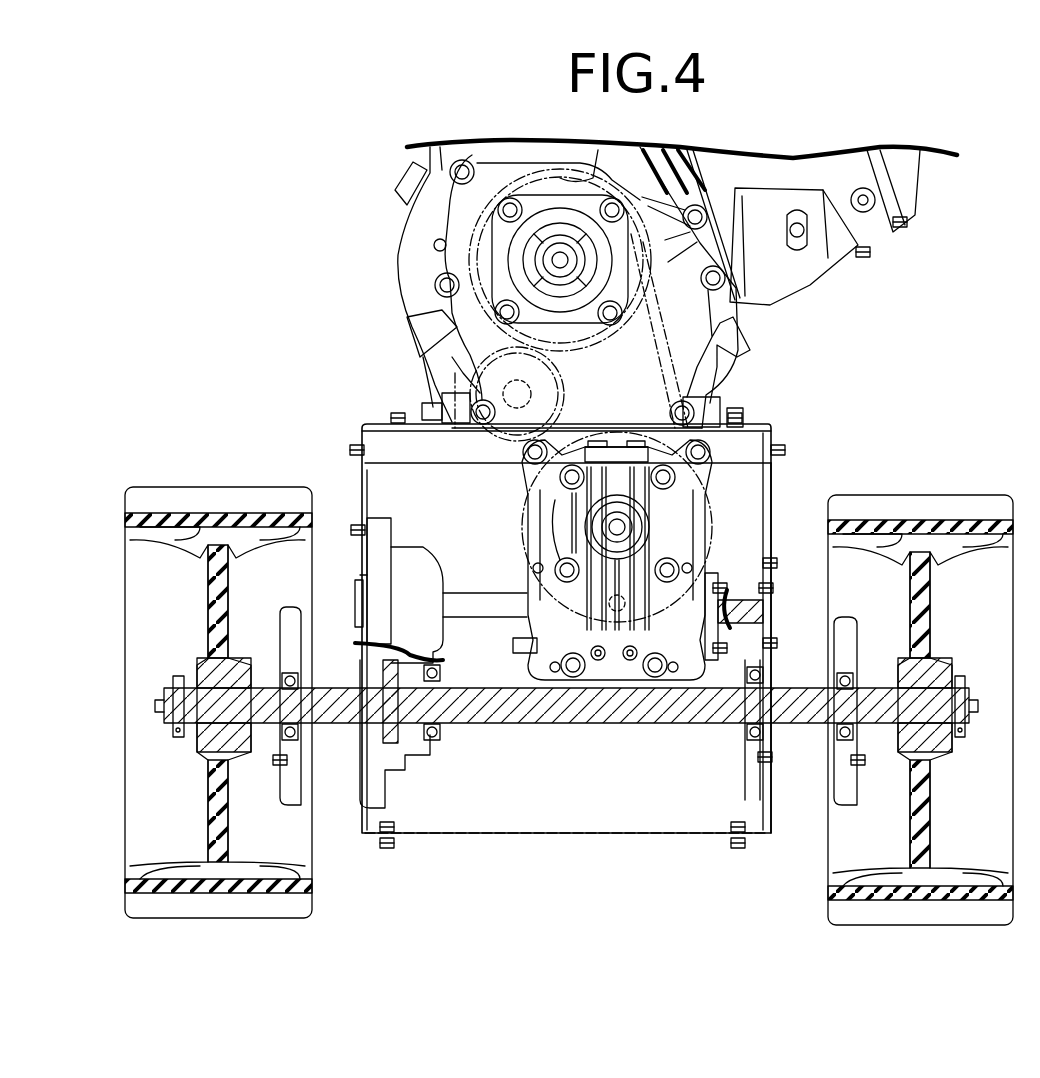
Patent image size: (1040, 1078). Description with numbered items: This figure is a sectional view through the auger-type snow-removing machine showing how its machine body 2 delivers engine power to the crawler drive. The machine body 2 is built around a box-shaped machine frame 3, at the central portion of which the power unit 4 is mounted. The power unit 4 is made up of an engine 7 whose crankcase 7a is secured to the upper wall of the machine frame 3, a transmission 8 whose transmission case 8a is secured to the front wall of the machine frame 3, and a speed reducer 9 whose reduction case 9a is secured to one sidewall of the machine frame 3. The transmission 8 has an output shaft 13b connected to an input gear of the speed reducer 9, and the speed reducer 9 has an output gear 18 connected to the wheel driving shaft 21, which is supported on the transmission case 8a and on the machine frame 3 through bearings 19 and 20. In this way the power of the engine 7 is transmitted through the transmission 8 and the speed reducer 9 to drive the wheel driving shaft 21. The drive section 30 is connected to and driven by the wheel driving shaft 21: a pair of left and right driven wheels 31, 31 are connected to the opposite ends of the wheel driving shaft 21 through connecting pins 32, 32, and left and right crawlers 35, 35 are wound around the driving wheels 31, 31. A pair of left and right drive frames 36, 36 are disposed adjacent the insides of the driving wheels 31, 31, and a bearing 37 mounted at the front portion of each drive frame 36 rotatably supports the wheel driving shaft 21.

The machine body 2 is at (812, 446).
The machine frame 3 is at (776, 512).
The power unit 4 is at (394, 259).
The engine 7 is at (815, 296).
The crankcase 7a is at (625, 378).
The transmission 8 is at (520, 511).
The transmission case 8a is at (548, 532).
The speed reducer 9 is at (414, 539).
The reduction case 9a is at (377, 575).
The output shaft 13b is at (490, 627).
The output gear 18 is at (383, 673).
The bearing 19 is at (445, 732).
The bearing 20 is at (745, 738).
The wheel driving shaft 21 is at (553, 715).
The drive section 30 is at (233, 483).
The driven wheel 31 is at (213, 578).
The connecting pin 32 is at (178, 672).
The crawler 35 is at (178, 497).
The drive frame 36 is at (290, 605).
The bearing 37 is at (292, 672).